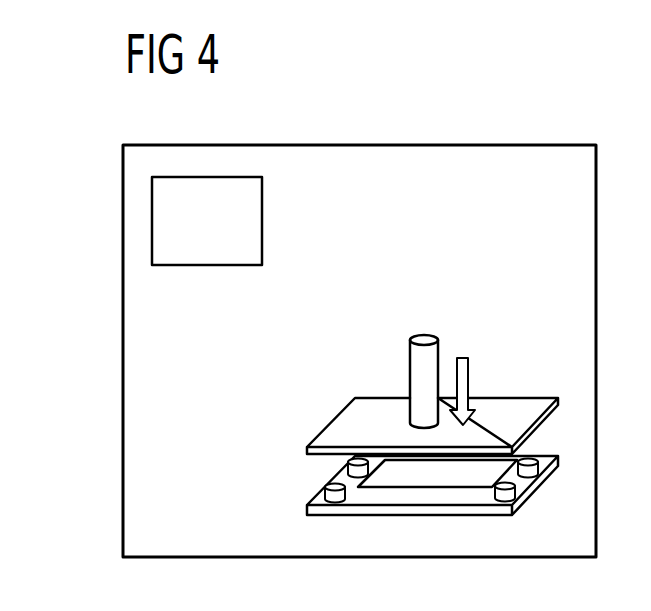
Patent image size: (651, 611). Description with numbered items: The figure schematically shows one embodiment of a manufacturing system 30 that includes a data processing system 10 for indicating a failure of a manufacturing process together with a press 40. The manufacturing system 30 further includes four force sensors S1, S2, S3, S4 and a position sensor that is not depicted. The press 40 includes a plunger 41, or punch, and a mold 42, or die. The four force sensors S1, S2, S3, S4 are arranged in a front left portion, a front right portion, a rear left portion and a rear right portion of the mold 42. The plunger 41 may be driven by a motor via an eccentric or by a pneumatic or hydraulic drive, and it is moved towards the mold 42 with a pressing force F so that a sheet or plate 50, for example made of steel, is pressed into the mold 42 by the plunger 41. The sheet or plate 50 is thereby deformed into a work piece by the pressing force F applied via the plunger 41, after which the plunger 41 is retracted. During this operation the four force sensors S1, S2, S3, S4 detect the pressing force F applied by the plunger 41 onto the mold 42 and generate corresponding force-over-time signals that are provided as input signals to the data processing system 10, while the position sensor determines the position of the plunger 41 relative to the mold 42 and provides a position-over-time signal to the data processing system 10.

The data processing system 10 is at (262, 223).
The manufacturing system 30 is at (358, 145).
The press 40 is at (513, 313).
The plunger 41 is at (513, 407).
The mold 42 is at (453, 510).
The sheet or plate 50 is at (428, 478).
The force sensor S1 is at (326, 492).
The force sensor S2 is at (515, 498).
The force sensor S3 is at (350, 466).
The force sensor S4 is at (540, 470).
The pressing force F is at (465, 357).